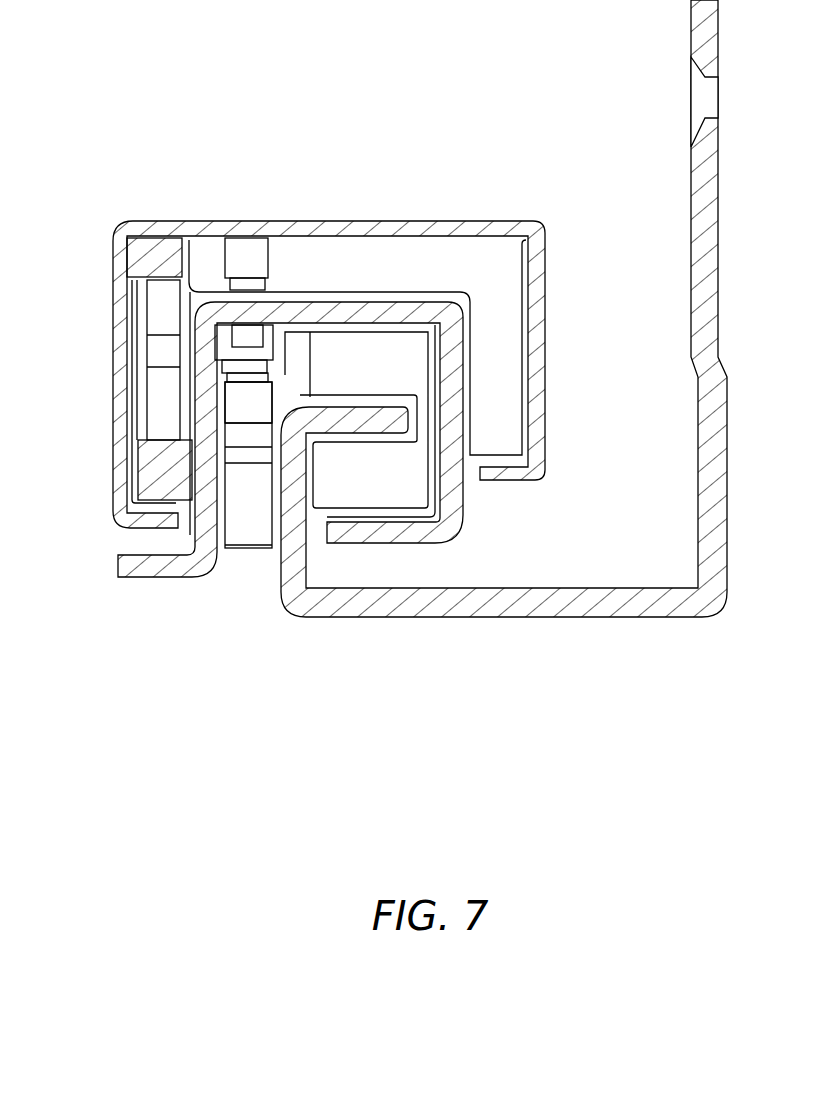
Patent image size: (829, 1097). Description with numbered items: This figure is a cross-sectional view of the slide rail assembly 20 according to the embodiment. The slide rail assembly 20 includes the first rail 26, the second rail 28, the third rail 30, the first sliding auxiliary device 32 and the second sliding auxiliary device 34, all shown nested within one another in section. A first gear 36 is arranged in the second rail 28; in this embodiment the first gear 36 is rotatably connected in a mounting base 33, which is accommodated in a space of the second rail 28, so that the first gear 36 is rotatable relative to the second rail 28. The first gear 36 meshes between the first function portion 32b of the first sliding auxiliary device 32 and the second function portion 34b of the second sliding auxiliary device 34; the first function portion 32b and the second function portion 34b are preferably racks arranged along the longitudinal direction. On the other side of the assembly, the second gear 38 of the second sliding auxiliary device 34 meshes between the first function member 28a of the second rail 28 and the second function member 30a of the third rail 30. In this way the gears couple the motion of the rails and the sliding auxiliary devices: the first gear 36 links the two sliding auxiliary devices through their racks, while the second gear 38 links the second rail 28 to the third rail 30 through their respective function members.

The slide rail assembly 20 is at (108, 54).
The first rail 26 is at (368, 424).
The second rail 28 is at (369, 302).
The first function member 28a is at (160, 478).
The third rail 30 is at (482, 229).
The second function member 30a is at (160, 258).
The first sliding auxiliary device 32 is at (231, 561).
The first function portion 32b is at (248, 405).
The mounting base 33 is at (232, 349).
The second sliding auxiliary device 34 is at (191, 236).
The second function portion 34b is at (248, 258).
The first gear 36 is at (270, 289).
The second gear 38 is at (145, 372).